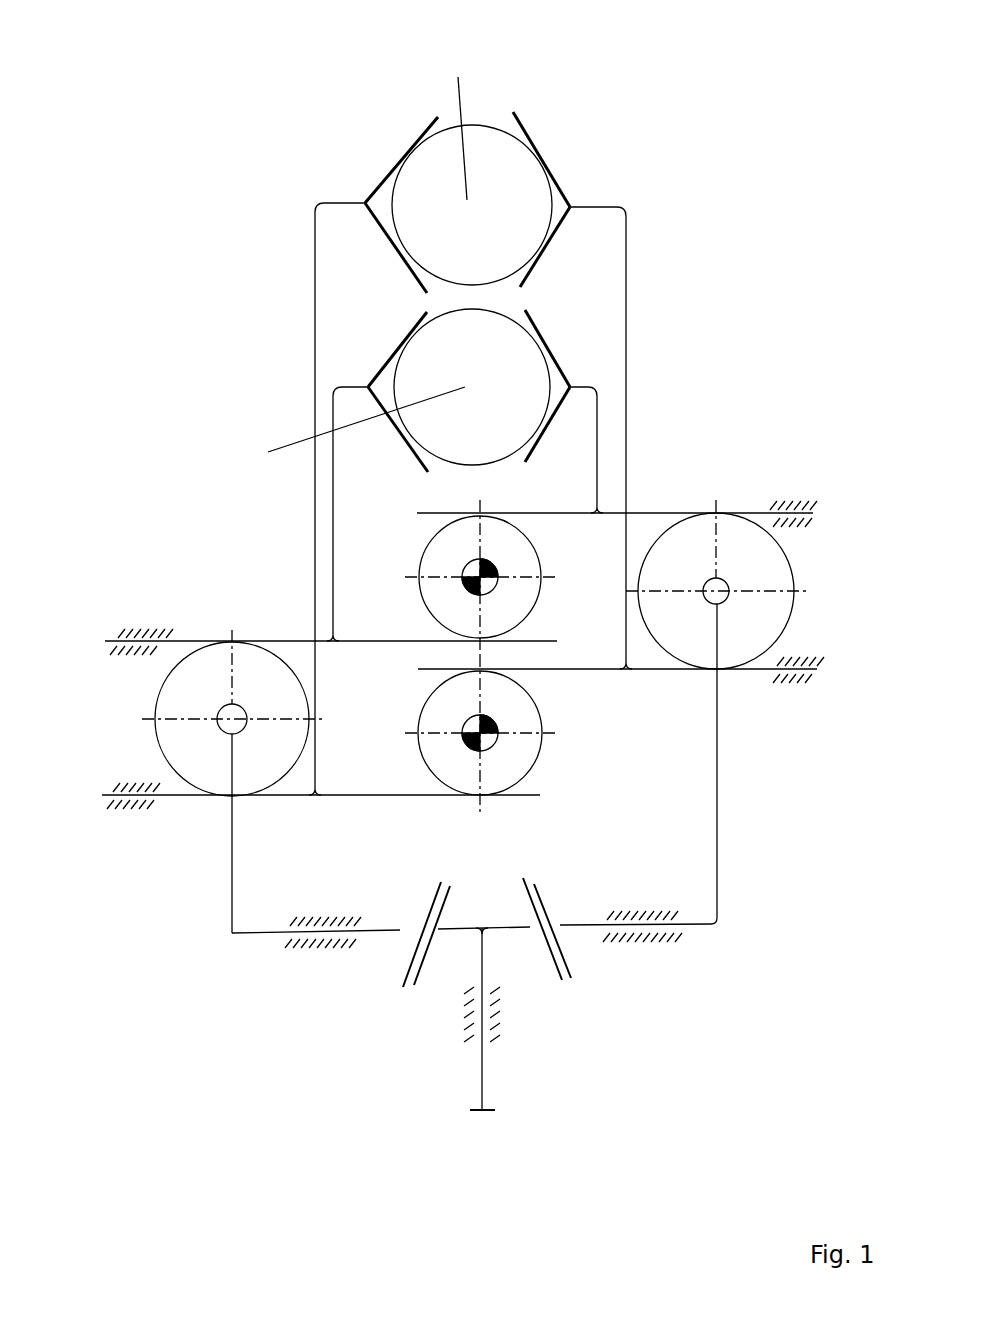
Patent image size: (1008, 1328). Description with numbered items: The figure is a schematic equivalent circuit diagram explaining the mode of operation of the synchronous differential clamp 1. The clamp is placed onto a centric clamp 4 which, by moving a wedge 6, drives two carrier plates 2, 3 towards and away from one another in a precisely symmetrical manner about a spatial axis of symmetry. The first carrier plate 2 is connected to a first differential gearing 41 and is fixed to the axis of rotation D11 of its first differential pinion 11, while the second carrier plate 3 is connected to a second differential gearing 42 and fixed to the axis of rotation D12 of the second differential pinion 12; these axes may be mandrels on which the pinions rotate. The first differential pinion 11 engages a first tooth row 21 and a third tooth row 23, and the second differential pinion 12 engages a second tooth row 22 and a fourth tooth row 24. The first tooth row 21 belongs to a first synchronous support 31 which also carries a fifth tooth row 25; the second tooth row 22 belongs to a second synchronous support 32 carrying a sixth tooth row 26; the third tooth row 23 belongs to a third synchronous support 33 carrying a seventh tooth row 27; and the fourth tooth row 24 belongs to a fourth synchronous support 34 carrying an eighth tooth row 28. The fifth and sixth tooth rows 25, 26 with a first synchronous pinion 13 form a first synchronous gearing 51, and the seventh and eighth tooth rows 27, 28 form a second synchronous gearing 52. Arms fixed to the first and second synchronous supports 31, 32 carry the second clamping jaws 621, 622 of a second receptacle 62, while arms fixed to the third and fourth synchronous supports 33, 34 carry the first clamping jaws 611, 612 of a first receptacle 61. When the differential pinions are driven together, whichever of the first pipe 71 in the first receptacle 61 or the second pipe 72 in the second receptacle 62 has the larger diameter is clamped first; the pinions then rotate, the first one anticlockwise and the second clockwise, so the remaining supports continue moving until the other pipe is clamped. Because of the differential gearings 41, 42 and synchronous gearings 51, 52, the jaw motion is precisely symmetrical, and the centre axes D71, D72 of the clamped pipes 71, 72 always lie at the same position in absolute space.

The synchronous differential clamp 1 is at (695, 246).
The first carrier plate 2 is at (562, 923).
The second carrier plate 3 is at (405, 927).
The centric clamp 4 is at (524, 999).
The wedge 6 is at (471, 910).
The first differential pinion 11 is at (745, 560).
The second differential pinion 12 is at (187, 695).
The first synchronous pinion 13 is at (443, 545).
The first tooth row 21 is at (745, 513).
The second tooth row 22 is at (240, 639).
The third tooth row 23 is at (788, 671).
The fourth tooth row 24 is at (180, 795).
The fifth tooth row 25 is at (443, 513).
The sixth tooth row 26 is at (512, 637).
The seventh tooth row 27 is at (517, 672).
The eighth tooth row 28 is at (487, 796).
The first synchronous support 31 is at (642, 513).
The second synchronous support 32 is at (350, 641).
The third synchronous support 33 is at (657, 668).
The fourth synchronous support 34 is at (290, 795).
The first differential gearing 41 is at (815, 607).
The second differential gearing 42 is at (120, 711).
The first synchronous gearing 51 is at (393, 563).
The second synchronous gearing 52 is at (568, 775).
The first receptacle 61 is at (447, 185).
The first clamping jaw 611 is at (513, 127).
The other first clamping jaw 612 is at (403, 253).
The second receptacle 62 is at (498, 470).
The second clamping jaw 621 is at (557, 362).
The other second clamping jaw 622 is at (380, 370).
The first pipe 71 is at (430, 132).
The second pipe 72 is at (373, 389).
The centre axis of the first pipe D71 is at (460, 120).
The centre axis of the second pipe D72 is at (338, 422).
The axis of rotation of the first differential pinion D11 is at (730, 591).
The axis of rotation of the second differential pinion D12 is at (226, 707).